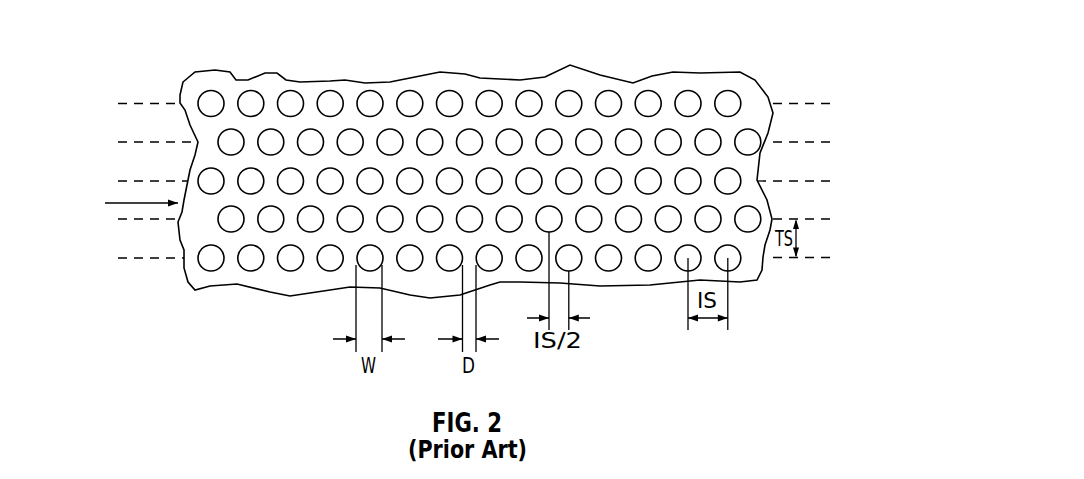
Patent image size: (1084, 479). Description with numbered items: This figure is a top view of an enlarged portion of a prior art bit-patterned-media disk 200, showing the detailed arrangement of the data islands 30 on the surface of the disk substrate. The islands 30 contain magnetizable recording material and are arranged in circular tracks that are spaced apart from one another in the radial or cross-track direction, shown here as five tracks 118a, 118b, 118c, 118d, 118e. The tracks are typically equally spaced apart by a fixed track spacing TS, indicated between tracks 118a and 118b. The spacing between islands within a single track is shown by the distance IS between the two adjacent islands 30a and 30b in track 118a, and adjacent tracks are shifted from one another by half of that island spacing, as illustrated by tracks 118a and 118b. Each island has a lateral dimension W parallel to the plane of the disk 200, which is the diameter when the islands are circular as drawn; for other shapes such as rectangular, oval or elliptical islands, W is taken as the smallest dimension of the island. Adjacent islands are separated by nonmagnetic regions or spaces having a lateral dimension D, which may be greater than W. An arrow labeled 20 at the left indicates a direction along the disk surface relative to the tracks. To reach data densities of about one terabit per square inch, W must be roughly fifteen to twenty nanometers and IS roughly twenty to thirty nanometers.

The fluid flow direction 20 is at (125, 203).
The data islands 30 is at (370, 90).
The data island 30a is at (684, 271).
The data island 30b is at (731, 271).
The track 118a is at (811, 258).
The track 118b is at (811, 219).
The track 118c is at (811, 181).
The track 118d is at (811, 143).
The track 118e is at (811, 104).
The disk 200 is at (288, 297).